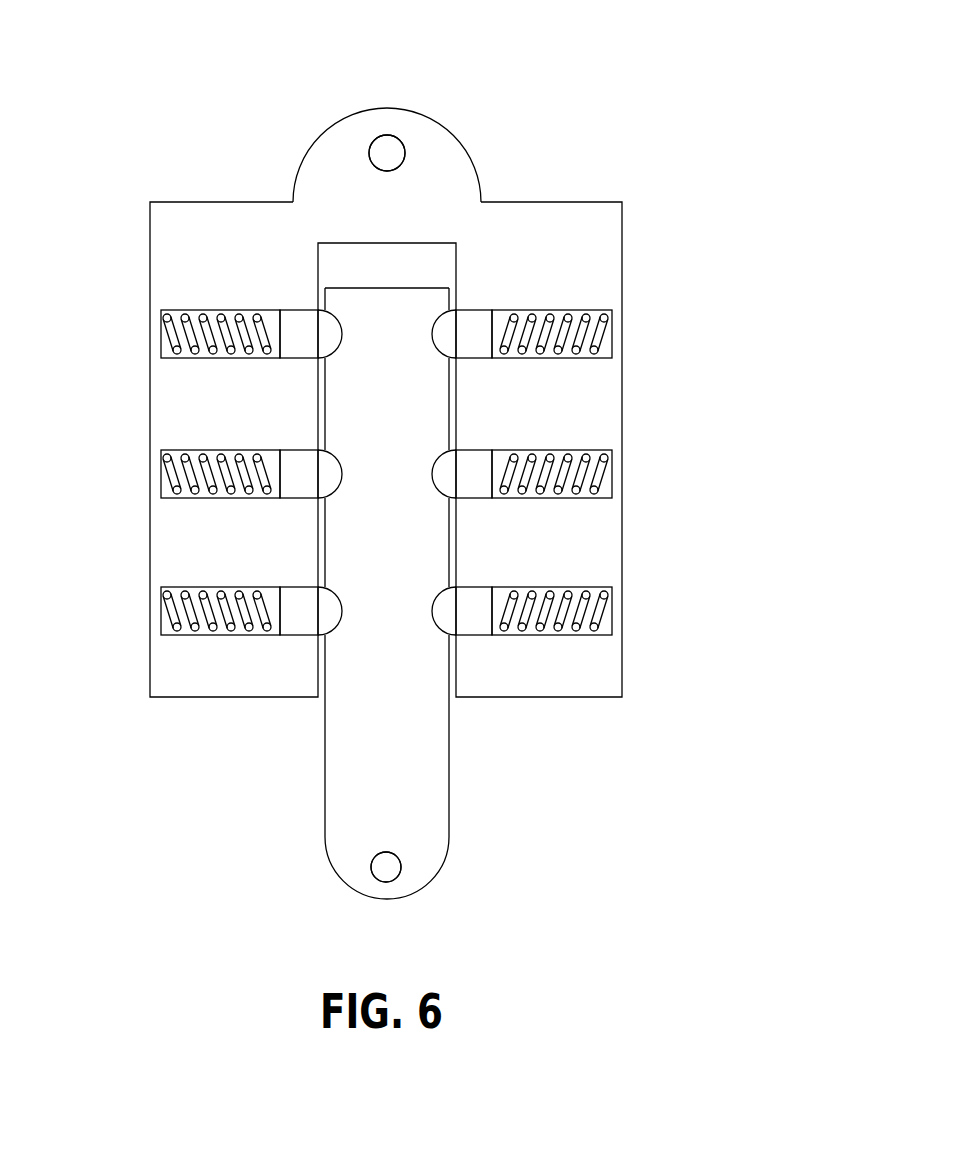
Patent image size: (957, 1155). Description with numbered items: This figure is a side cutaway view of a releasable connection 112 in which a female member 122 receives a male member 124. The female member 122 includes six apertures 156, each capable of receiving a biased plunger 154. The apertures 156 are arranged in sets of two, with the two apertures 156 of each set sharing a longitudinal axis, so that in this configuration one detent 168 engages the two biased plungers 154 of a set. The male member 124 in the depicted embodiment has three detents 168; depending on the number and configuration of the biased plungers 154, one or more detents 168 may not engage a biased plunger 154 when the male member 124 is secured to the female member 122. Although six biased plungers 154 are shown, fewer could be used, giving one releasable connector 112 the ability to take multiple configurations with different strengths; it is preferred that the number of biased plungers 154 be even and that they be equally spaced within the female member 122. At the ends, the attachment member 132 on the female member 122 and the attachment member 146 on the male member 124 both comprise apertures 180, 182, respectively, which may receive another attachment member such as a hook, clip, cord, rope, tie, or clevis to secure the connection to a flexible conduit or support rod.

The releasable connection 112 is at (655, 170).
The female member 122 is at (598, 270).
The male member 124 is at (432, 755).
The attachment member 132 is at (396, 148).
The attachment member 146 is at (402, 872).
The biased plunger 154 is at (165, 325).
The aperture 156 is at (165, 359).
The detent 168 is at (340, 245).
The aperture 180 is at (374, 140).
The aperture 182 is at (372, 864).